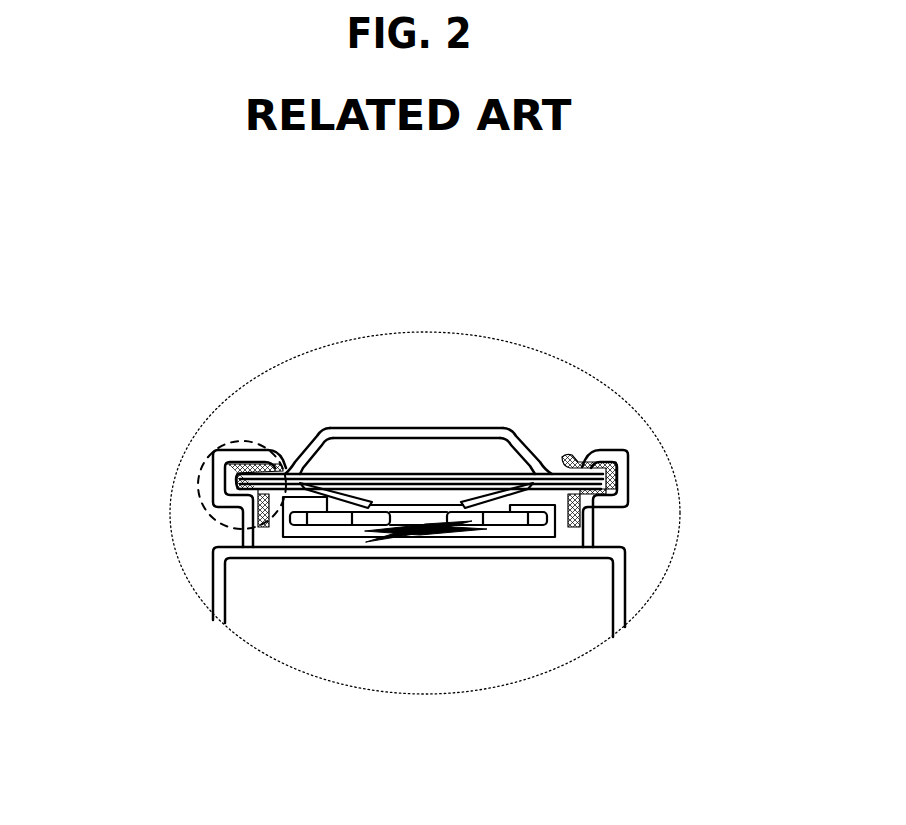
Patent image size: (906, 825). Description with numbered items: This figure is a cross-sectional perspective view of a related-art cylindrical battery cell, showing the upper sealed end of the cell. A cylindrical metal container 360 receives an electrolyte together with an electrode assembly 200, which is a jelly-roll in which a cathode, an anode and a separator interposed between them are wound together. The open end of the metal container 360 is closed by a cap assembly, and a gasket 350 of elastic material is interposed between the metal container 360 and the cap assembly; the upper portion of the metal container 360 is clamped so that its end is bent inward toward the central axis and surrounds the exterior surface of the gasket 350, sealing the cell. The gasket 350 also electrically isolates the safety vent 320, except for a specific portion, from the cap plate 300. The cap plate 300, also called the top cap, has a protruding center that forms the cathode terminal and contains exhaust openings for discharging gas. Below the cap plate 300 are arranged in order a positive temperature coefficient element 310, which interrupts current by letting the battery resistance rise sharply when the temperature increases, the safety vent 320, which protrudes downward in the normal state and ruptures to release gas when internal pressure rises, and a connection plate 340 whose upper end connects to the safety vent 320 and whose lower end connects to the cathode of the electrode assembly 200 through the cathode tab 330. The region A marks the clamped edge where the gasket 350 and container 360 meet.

The electrode assembly 200 is at (577, 613).
The cap plate 300 is at (425, 425).
The positive temperature coefficient (PTC) element 310 is at (517, 428).
The safety vent 320 is at (317, 427).
The cathode tab 330 is at (413, 540).
The connection plate 340 is at (355, 532).
The gasket 350 is at (230, 443).
The cylindrical metal container 360 is at (623, 465).
The enlarged region A is at (197, 500).